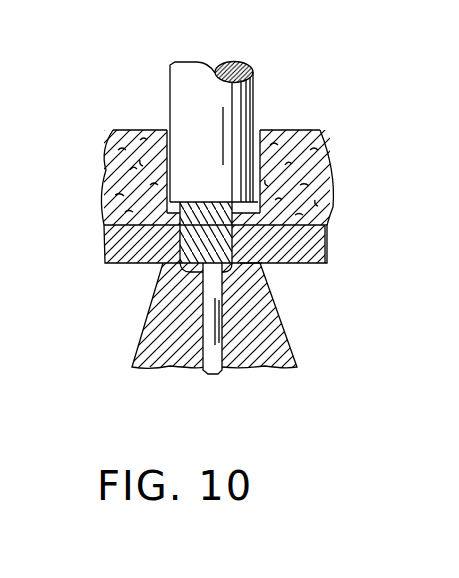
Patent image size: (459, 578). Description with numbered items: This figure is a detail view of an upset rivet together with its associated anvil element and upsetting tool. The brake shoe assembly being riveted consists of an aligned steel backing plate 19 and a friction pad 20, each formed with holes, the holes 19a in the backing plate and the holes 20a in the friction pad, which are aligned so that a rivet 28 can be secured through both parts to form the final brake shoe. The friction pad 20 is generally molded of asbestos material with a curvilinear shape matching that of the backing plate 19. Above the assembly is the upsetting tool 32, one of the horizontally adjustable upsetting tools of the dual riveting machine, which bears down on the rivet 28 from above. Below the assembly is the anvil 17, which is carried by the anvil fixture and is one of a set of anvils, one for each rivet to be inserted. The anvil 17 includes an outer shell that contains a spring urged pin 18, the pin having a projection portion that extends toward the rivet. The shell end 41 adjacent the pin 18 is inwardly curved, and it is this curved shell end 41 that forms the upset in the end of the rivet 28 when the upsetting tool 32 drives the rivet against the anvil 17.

The anvil 17 is at (147, 322).
The spring urged pin 18 is at (216, 372).
The steel backing plate 19 is at (107, 248).
The holes in backing plate 19a is at (235, 245).
The friction pad 20 is at (310, 156).
The holes in friction pad 20a is at (258, 130).
The rivet 28 is at (205, 200).
The upsetting tool 32 is at (184, 78).
The shell end 41 is at (253, 264).